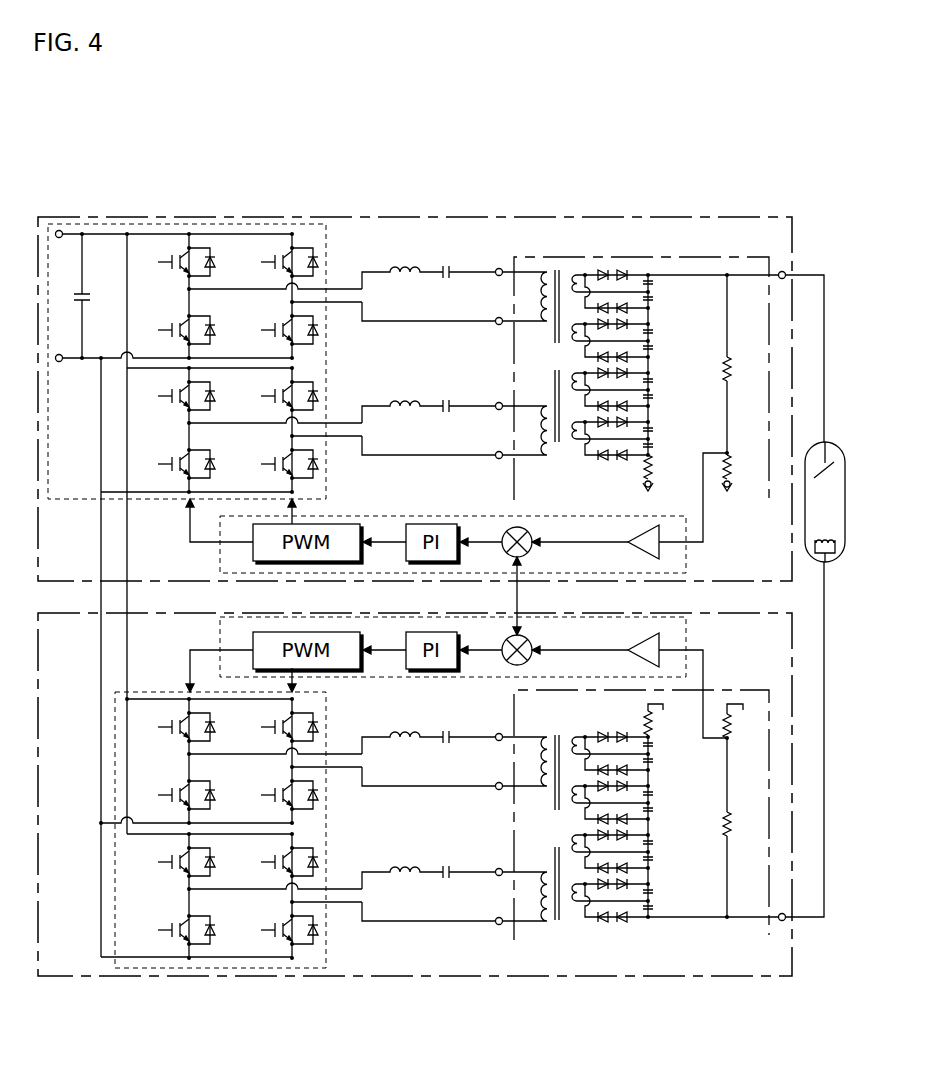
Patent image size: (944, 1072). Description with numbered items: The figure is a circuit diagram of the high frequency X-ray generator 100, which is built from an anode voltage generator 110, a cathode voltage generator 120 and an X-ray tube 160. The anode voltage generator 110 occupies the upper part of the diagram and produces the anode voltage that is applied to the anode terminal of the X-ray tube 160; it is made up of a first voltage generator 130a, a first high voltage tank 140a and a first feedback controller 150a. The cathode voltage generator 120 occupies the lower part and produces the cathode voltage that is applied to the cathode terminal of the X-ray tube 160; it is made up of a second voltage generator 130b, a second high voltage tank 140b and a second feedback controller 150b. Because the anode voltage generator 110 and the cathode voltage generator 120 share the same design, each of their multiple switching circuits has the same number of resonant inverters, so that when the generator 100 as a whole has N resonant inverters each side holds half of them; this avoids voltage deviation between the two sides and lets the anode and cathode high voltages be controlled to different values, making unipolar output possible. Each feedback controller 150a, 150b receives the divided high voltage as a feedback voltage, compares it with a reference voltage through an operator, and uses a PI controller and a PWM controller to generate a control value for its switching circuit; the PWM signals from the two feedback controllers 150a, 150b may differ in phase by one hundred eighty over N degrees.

The high frequency X-ray generator 100 is at (72, 164).
The anode voltage generator 110 is at (718, 217).
The cathode voltage generator 120 is at (718, 977).
The first voltage generator 130a is at (326, 240).
The second voltage generator 130b is at (326, 942).
The first high voltage tank 140a is at (514, 257).
The second high voltage tank 140b is at (514, 940).
The first feedback controller 150a is at (686, 548).
The second feedback controller 150b is at (686, 630).
The X-ray tube 160 is at (835, 442).